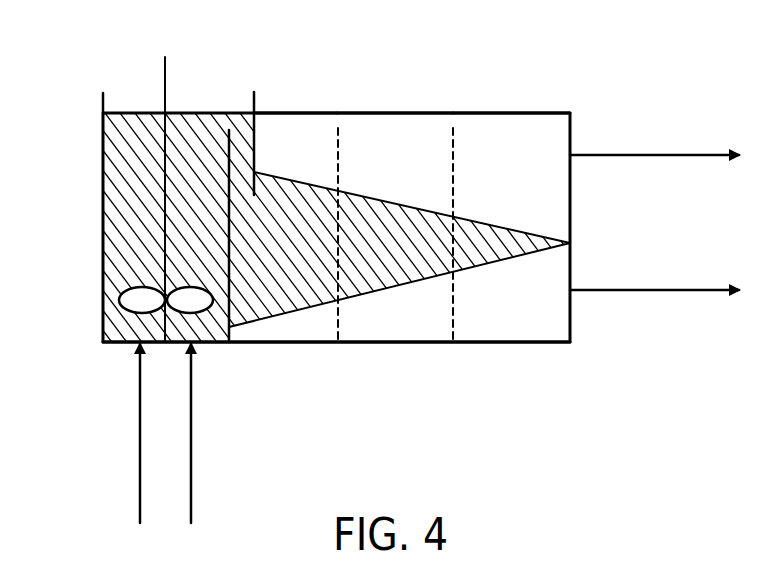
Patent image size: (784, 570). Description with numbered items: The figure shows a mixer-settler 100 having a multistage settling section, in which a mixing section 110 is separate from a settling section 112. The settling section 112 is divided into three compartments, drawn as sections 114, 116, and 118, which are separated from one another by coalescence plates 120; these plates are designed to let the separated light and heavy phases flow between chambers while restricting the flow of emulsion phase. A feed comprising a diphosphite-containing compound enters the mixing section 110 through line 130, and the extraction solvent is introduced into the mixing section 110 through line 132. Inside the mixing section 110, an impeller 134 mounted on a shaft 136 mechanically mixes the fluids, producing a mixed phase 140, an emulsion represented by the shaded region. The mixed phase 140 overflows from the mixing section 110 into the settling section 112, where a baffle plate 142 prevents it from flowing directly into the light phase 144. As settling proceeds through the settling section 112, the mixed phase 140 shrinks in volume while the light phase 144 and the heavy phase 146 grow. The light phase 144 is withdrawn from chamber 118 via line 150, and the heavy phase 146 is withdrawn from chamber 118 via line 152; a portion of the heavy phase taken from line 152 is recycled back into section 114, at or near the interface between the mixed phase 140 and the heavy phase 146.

The mixer-settler 100 is at (377, 41).
The mixing section 110 is at (102, 174).
The settling section 112 is at (401, 346).
The section 114 is at (287, 112).
The section 116 is at (402, 112).
The section 118 is at (511, 112).
The coalescence plates 120 is at (449, 160).
The line 130 is at (139, 433).
The line 132 is at (193, 480).
The impeller 134 is at (118, 302).
The shaft 136 is at (164, 63).
The mixed phase 140 is at (217, 128).
The baffle plate 142 is at (255, 140).
The light phase 144 is at (530, 186).
The heavy phase 146 is at (530, 307).
The line 150 is at (686, 152).
The line 152 is at (686, 289).